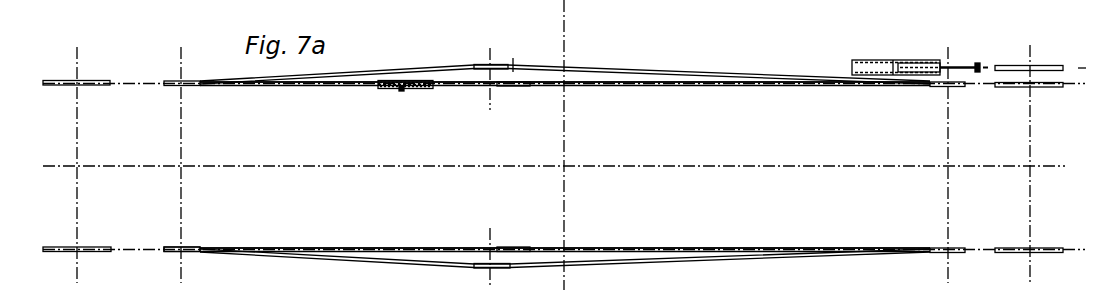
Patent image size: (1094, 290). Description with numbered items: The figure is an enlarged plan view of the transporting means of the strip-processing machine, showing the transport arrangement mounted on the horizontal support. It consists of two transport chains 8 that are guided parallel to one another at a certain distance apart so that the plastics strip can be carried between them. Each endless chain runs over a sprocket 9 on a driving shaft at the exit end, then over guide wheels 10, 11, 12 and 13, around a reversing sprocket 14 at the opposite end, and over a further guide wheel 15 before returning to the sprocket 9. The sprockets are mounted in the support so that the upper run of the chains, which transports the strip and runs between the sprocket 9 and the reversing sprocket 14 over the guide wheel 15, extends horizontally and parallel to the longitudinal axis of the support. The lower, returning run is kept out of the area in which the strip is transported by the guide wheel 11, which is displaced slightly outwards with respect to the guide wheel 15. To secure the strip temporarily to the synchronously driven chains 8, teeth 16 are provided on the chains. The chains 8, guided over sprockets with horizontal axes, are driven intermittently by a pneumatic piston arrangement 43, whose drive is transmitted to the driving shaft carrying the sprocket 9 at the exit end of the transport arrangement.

The transport chains 8 is at (351, 86).
The sprocket 9 is at (1022, 88).
The guide wheel 10 is at (943, 87).
The guide wheel 11 is at (487, 268).
The guide wheel 12 is at (194, 247).
The guide wheel 13 is at (206, 235).
The reversing sprocket 14 is at (57, 247).
The guide wheel 15 is at (522, 246).
The teeth 16 is at (402, 91).
The pneumatic piston arrangement 43 is at (876, 60).